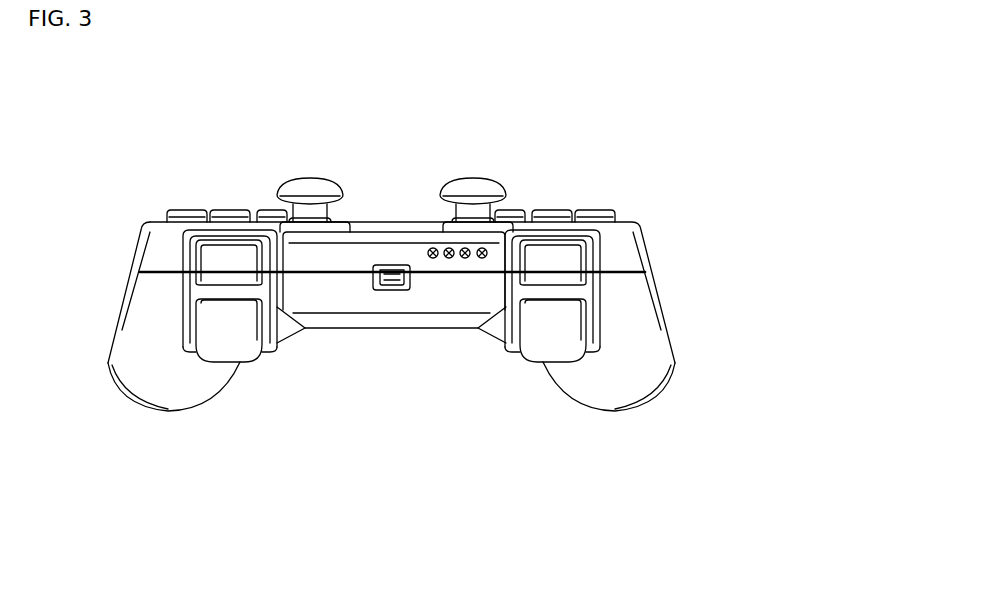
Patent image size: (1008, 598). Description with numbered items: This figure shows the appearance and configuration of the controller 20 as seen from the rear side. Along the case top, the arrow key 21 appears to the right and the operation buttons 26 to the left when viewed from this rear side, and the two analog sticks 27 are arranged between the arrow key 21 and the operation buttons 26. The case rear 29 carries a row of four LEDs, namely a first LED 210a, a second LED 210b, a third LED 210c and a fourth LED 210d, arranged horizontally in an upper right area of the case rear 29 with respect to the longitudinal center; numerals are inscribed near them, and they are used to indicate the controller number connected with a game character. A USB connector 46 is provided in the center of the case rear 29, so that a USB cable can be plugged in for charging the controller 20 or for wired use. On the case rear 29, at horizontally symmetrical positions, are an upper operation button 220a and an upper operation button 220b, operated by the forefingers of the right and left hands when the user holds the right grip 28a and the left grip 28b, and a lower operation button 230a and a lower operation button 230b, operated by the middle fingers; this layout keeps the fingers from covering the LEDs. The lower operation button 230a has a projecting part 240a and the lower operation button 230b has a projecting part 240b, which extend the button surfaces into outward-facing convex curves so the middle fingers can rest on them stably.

The controller 20 is at (651, 99).
The arrow key 21 is at (555, 200).
The operation buttons 26 is at (232, 202).
The analog sticks 27 is at (307, 187).
The case rear 29 is at (368, 243).
The USB connector 46 is at (390, 283).
The first LED 210a is at (432, 262).
The second LED 210b is at (448, 262).
The third LED 210c is at (464, 262).
The fourth LED 210d is at (483, 262).
The upper operation button 220a is at (210, 255).
The upper operation button 220b is at (573, 255).
The lower operation button 230a is at (208, 315).
The lower operation button 230b is at (572, 315).
The projecting part 240a is at (243, 360).
The projecting part 240b is at (553, 360).
The right grip 28a is at (167, 395).
The left grip 28b is at (618, 395).